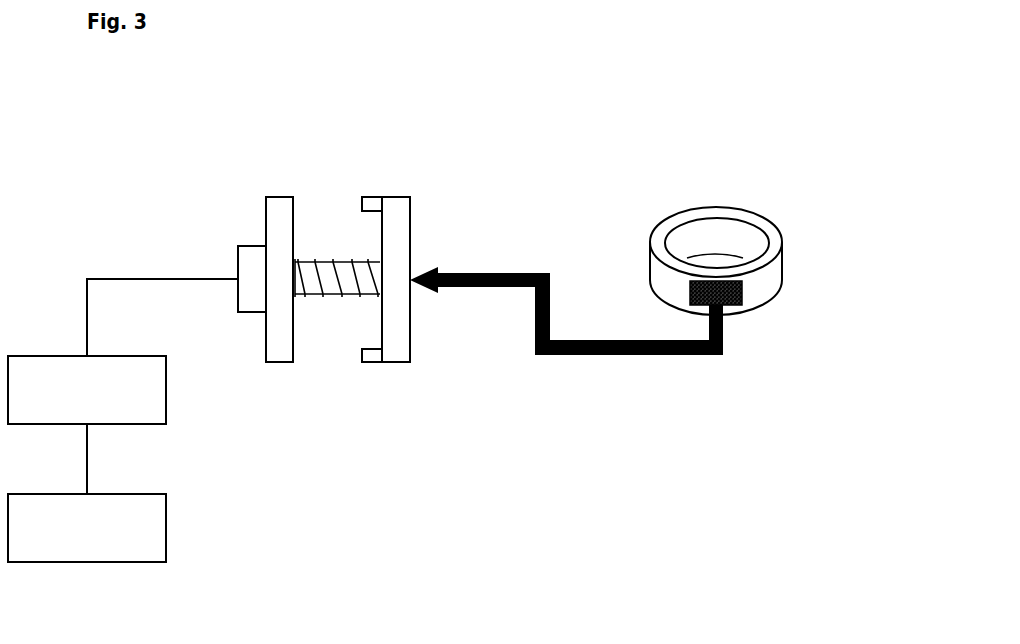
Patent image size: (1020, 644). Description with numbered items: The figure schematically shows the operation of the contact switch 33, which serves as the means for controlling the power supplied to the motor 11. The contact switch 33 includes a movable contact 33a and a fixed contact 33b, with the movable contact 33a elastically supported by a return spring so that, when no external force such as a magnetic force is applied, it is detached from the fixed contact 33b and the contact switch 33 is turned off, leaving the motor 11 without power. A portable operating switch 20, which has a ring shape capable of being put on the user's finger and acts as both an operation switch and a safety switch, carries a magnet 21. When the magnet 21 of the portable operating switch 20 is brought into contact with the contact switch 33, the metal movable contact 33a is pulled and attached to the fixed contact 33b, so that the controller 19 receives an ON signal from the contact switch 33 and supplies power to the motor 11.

The motor 11 is at (166, 528).
The controller 19 is at (166, 390).
The portable operating switch 20 is at (762, 220).
The magnet 21 is at (742, 298).
The contact switch 33 is at (344, 218).
The movable contact 33a is at (392, 241).
The fixed contact 33b is at (281, 203).